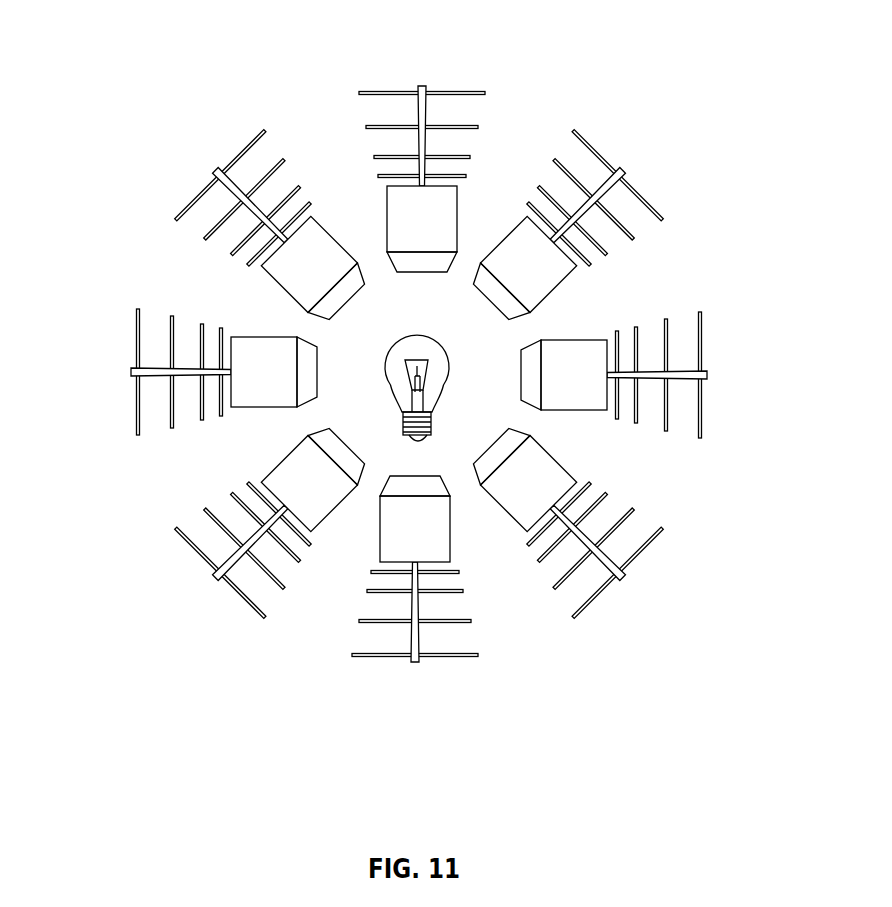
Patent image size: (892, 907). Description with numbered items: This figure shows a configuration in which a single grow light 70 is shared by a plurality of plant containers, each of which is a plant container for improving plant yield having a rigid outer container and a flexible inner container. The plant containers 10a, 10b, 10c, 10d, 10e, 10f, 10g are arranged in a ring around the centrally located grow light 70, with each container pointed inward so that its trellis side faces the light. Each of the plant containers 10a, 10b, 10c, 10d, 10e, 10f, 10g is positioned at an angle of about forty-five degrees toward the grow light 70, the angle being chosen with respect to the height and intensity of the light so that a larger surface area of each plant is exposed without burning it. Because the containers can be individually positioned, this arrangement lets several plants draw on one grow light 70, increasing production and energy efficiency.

The plant container 10a is at (423, 84).
The plant container 10b is at (631, 166).
The plant container 10c is at (712, 375).
The plant container 10d is at (627, 587).
The plant container 10e is at (415, 670).
The plant container 10f is at (209, 583).
The plant container 10g is at (125, 372).
The grow light 70 is at (437, 358).